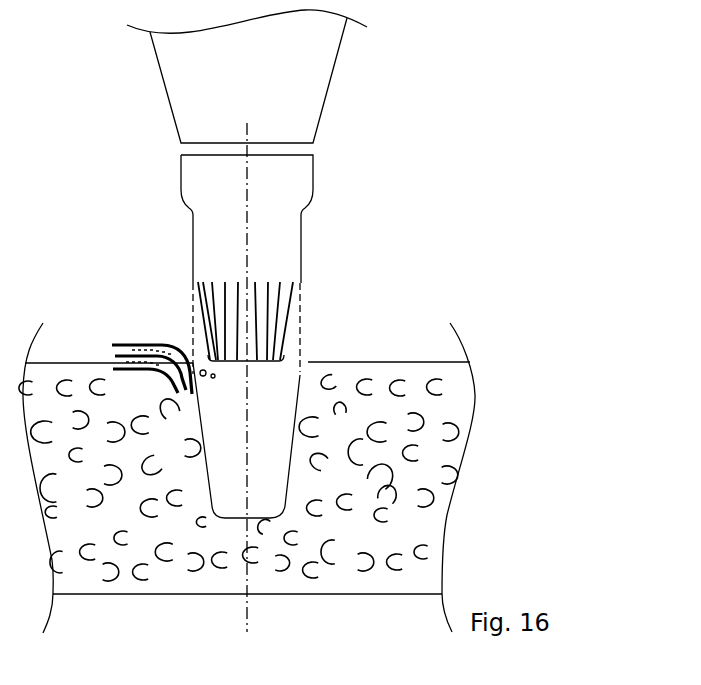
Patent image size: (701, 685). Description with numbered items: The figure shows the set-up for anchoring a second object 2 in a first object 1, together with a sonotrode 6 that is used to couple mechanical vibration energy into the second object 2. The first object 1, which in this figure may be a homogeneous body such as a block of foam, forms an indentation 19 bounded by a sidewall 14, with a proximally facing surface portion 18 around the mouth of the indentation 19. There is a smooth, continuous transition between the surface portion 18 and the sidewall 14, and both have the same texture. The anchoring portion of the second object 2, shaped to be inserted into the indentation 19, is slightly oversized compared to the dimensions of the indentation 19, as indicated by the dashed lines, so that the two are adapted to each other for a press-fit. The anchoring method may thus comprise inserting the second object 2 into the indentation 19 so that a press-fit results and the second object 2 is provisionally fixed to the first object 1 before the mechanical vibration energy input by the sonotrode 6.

The first object 1 is at (418, 470).
The second object 2 is at (283, 185).
The sonotrode 6 is at (300, 82).
The sidewall 14 is at (300, 375).
The proximally facing surface portion 18 is at (85, 363).
The indentation 19 is at (228, 388).